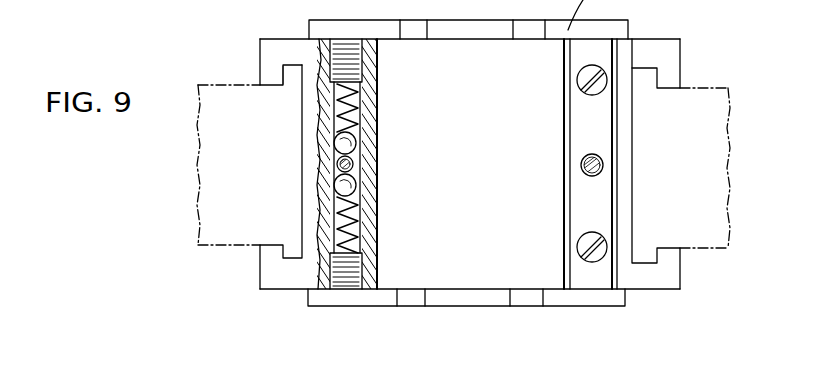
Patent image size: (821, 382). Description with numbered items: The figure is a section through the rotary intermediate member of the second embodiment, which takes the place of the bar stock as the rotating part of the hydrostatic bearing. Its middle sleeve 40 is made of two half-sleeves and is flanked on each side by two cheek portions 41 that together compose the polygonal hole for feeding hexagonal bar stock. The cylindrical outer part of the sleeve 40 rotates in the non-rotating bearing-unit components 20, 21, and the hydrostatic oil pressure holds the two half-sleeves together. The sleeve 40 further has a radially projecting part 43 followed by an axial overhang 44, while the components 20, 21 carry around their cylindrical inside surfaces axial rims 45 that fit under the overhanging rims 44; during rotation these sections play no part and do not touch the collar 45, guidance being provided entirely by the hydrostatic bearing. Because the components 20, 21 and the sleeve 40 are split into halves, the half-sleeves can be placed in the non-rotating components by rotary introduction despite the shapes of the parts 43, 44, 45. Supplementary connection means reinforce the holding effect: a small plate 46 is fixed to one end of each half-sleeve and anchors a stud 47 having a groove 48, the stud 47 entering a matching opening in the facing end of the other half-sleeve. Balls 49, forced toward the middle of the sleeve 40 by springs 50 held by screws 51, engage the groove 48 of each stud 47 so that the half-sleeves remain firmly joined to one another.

The bearing-unit component 20 is at (714, 172).
The bearing-unit component 21 is at (228, 165).
The middle sleeve 40 is at (363, 222).
The cheek portion 41 is at (518, 292).
The radially projecting part 43 is at (287, 47).
The axial overhang 44 is at (273, 76).
The axial rim 45 is at (293, 77).
The small plate 46 is at (592, 118).
The stud 47 is at (355, 172).
The groove 48 is at (337, 163).
The ball 49 is at (357, 145).
The spring 50 is at (355, 100).
The screw 51 is at (363, 62).